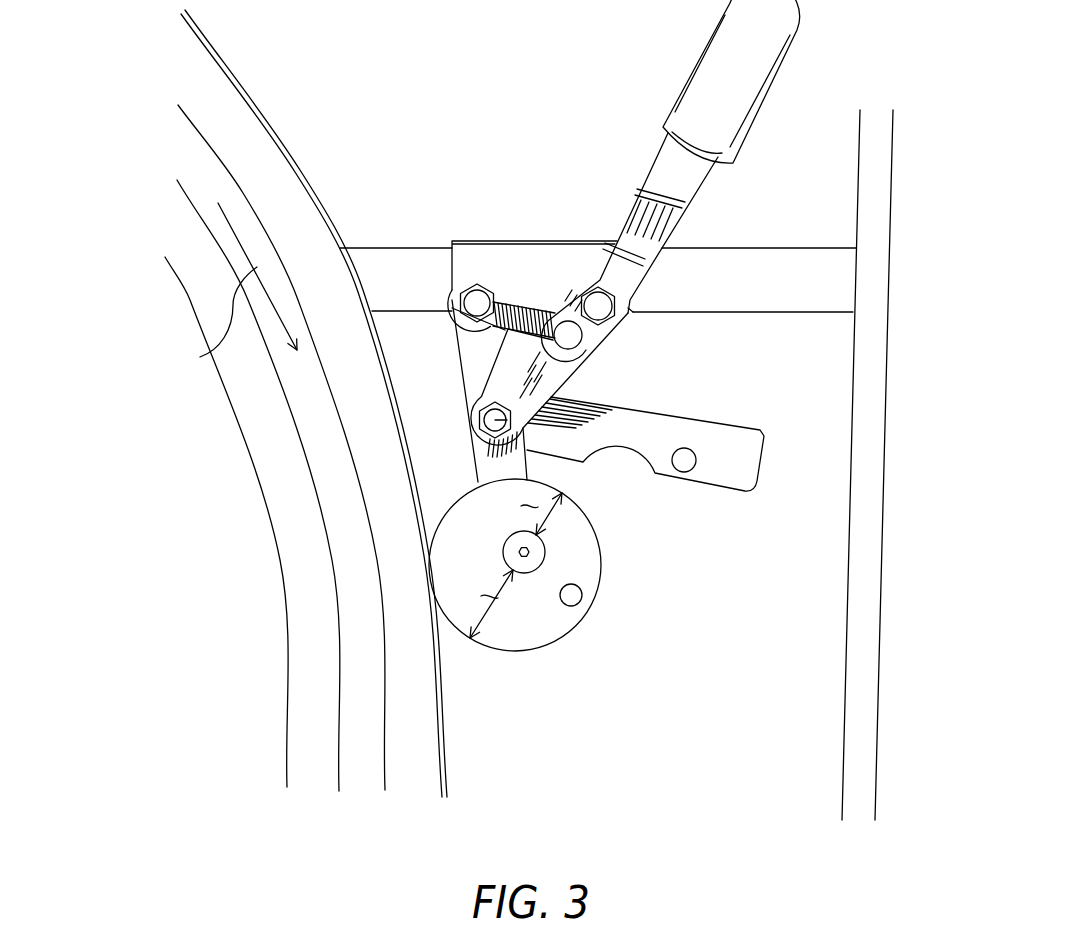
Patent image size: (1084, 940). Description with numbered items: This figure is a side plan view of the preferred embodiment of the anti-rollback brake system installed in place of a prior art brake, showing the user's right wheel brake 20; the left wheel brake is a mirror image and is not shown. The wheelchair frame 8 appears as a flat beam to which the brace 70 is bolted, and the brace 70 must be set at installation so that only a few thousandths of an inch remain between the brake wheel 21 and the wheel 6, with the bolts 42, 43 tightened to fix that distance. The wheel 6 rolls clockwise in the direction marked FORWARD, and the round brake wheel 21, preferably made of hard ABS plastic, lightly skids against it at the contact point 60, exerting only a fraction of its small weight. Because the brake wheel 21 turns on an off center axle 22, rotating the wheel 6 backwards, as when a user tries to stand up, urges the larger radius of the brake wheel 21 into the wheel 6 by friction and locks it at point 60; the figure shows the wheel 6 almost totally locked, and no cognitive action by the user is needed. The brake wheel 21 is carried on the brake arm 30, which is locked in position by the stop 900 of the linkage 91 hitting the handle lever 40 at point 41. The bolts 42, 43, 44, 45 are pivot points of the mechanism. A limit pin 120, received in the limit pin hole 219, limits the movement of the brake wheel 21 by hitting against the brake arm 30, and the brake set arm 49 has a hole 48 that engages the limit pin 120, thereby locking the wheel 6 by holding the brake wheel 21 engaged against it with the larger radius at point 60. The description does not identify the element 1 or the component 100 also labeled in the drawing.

The vehicle frame 1 is at (886, 719).
The wheel 6 is at (243, 128).
The wheelchair frame 8 is at (403, 263).
The right wheel brake 20 is at (717, 357).
The brake wheel 21 is at (561, 591).
The off center axle 22 is at (525, 556).
The brake arm 30 is at (490, 468).
The handle lever 40 is at (703, 88).
The point 41 is at (558, 296).
The bolt 42 is at (470, 287).
The bolt 43 is at (605, 322).
The bolt 44 is at (588, 343).
The bolt 45 is at (537, 430).
The hole 48 is at (689, 472).
The brake set arm 49 is at (679, 465).
The contact point 60 is at (422, 587).
The brace 70 is at (507, 267).
The linkage 91 is at (503, 388).
The spring 100 is at (507, 330).
The limit pin 120 is at (588, 620).
The limit pin hole 219 is at (575, 597).
The stop 900 is at (520, 358).